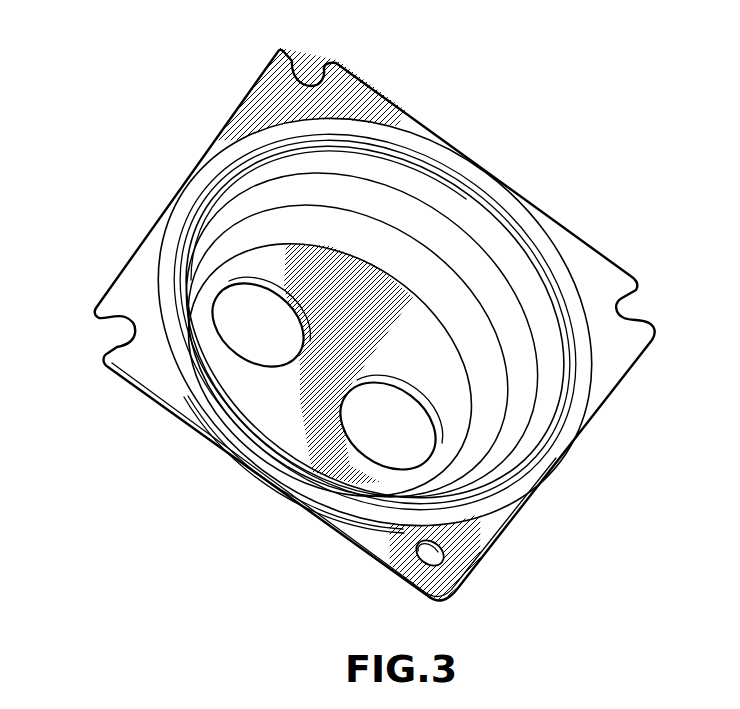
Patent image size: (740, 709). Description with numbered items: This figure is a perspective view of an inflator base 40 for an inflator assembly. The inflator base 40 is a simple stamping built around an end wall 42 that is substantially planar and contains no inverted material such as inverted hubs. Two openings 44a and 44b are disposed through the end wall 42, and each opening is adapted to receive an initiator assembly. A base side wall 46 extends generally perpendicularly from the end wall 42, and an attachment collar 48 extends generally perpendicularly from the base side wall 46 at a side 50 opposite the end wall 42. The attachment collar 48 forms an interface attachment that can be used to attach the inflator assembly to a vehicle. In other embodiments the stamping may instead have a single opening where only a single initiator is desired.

The inflator base 40 is at (353, 322).
The end wall 42 is at (184, 437).
The opening 44a is at (240, 364).
The opening 44b is at (375, 452).
The base side wall 46 is at (500, 297).
The attachment collar 48 is at (608, 397).
The side 50 is at (386, 140).